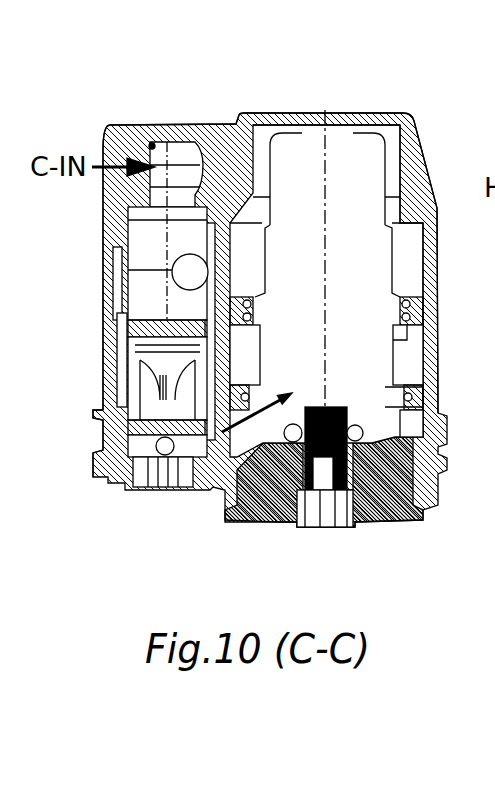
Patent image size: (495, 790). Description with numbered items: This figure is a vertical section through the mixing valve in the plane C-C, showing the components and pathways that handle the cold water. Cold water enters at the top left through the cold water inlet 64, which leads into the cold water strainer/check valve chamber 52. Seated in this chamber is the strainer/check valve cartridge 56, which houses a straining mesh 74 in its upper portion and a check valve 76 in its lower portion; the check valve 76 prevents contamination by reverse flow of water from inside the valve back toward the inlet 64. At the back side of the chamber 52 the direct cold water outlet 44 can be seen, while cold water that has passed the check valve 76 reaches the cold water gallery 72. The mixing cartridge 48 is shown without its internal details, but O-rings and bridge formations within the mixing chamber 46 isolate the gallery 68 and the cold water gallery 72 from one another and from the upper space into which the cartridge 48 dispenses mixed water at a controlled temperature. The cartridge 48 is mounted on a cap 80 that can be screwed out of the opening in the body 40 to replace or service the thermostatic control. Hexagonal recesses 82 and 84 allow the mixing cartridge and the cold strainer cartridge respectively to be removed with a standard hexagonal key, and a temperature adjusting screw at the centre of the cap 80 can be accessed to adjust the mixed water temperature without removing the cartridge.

The body 40 is at (420, 150).
The direct cold water outlet 44 is at (118, 270).
The mixing chamber 46 is at (345, 292).
The mixing cartridge 48 is at (414, 272).
The cold water strainer/check valve chamber 52 is at (107, 297).
The strainer/check valve cartridge 56 is at (107, 370).
The cold water inlet 64 is at (152, 143).
The gallery 68 is at (417, 357).
The cold water gallery 72 is at (417, 430).
The straining mesh 74 is at (103, 222).
The check valve 76 is at (92, 428).
The cap 80 is at (393, 523).
The hexagonal recess 82 is at (330, 530).
The hexagonal recess 84 is at (163, 490).